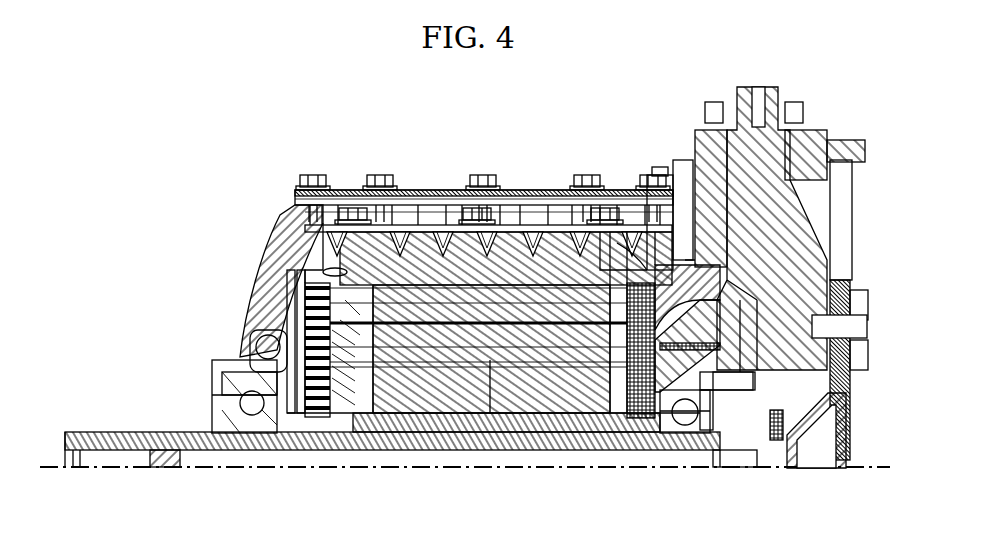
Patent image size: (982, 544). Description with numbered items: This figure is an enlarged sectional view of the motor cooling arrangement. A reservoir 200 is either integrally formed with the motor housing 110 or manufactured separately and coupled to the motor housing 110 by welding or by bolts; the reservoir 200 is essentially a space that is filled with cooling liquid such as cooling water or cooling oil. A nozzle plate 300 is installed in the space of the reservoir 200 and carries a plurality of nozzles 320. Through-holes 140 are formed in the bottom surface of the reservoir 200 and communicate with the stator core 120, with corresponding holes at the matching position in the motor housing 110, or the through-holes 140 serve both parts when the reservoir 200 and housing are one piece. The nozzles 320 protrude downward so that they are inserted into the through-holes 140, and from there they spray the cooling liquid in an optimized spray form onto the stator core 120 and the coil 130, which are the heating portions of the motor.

The motor housing 110 is at (355, 183).
The stator core 120 is at (435, 345).
The coil 130 is at (300, 352).
The through-holes 140 is at (412, 192).
The reservoir 200 is at (533, 212).
The nozzle plate 300 is at (458, 182).
The nozzles 320 is at (597, 177).